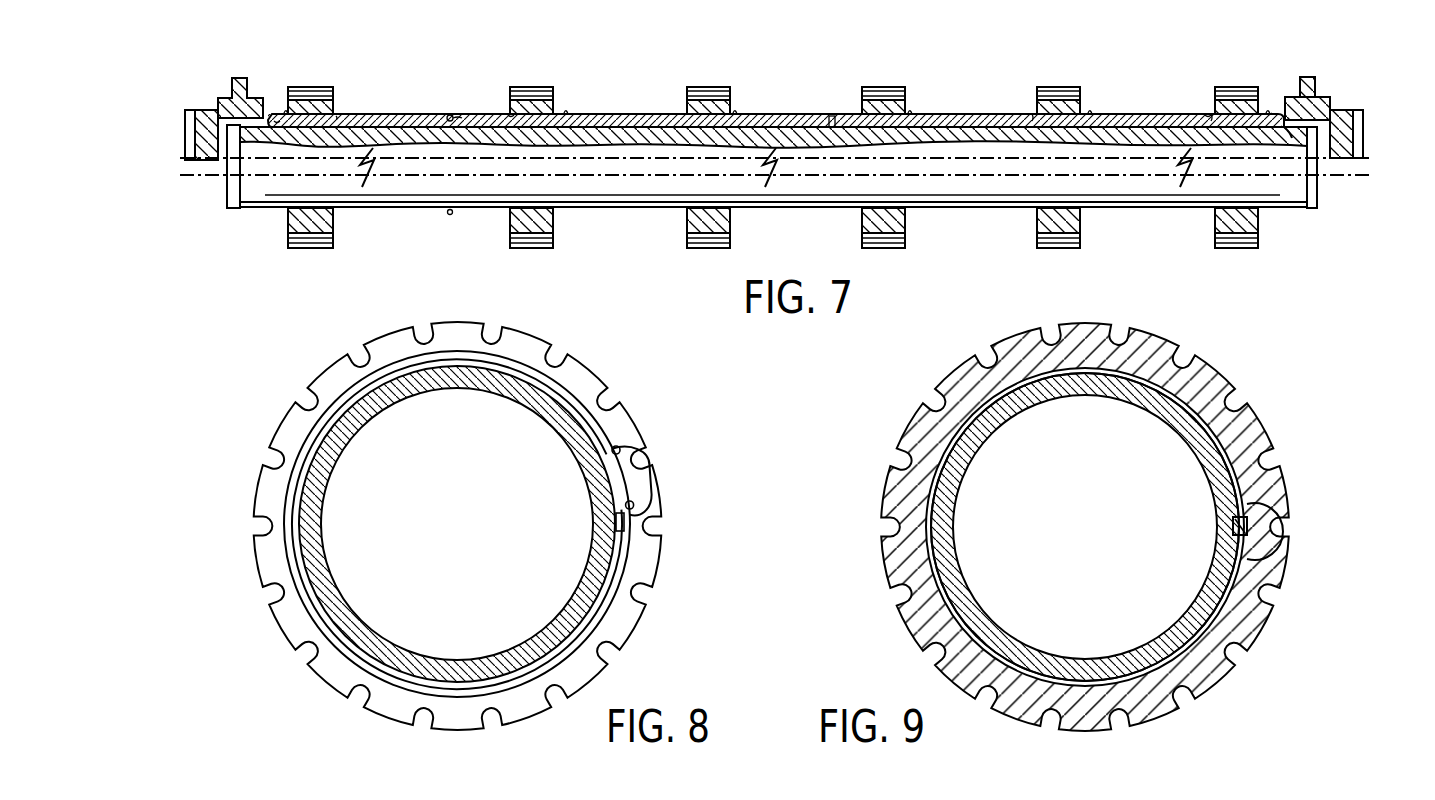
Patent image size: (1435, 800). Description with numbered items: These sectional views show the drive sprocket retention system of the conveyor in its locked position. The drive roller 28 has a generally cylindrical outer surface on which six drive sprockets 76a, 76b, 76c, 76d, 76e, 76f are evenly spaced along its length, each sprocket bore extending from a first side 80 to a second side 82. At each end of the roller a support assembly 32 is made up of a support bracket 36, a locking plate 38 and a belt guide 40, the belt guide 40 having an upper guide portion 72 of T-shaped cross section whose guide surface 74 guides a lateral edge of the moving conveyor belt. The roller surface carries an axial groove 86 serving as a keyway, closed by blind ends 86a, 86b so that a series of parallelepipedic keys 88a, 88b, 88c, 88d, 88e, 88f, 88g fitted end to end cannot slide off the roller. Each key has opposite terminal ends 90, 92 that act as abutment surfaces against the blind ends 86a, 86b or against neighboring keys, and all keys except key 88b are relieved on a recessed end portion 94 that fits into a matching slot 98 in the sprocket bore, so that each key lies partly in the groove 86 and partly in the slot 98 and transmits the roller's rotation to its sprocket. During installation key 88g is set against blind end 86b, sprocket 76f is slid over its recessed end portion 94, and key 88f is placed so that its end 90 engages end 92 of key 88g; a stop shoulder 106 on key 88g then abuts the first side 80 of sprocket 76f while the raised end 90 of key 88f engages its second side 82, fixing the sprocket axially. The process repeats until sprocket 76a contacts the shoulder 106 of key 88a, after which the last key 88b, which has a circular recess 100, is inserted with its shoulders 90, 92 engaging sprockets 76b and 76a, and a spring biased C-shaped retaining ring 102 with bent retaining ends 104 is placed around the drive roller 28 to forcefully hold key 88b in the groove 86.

In FIG. 7, the drive roller 28 is at (625, 197).
In FIG. 8, the drive roller 28 is at (441, 387).
In FIG. 9, the drive roller 28 is at (1070, 387).
In FIG. 7, the support assembly 32 is at (221, 84).
In FIG. 7, the support bracket 36 is at (1360, 141).
In FIG. 7, the locking plate 38 is at (1340, 113).
In FIG. 7, the belt guide 40 is at (1316, 100).
In FIG. 7, the upper guide portion 72 is at (1308, 90).
In FIG. 7, the guide surface 74 is at (1297, 90).
In FIG. 7, the drive sprocket 76a is at (307, 249).
In FIG. 7, the drive sprocket 76b is at (531, 249).
In FIG. 8, the drive sprocket 76b is at (582, 375).
In FIG. 7, the drive sprocket 76c is at (707, 249).
In FIG. 7, the drive sprocket 76d is at (882, 249).
In FIG. 7, the drive sprocket 76e is at (1057, 249).
In FIG. 9, the drive sprocket 76e is at (1208, 374).
In FIG. 7, the drive sprocket 76f is at (1236, 249).
In FIG. 7, the first side 80 is at (334, 232).
In FIG. 7, the second side 82 is at (290, 230).
In FIG. 7, the axial groove 86 is at (830, 116).
In FIG. 8, the axial groove 86 is at (615, 525).
In FIG. 9, the axial groove 86 is at (1232, 526).
In FIG. 7, the blind end 86a is at (268, 126).
In FIG. 7, the blind end 86b is at (1290, 130).
In FIG. 7, the key 88a is at (272, 124).
In FIG. 7, the key 88b is at (401, 117).
In FIG. 8, the key 88b is at (630, 525).
In FIG. 7, the key 88c is at (617, 118).
In FIG. 7, the key 88d is at (800, 118).
In FIG. 7, the key 88e is at (968, 118).
In FIG. 7, the key 88f is at (1150, 118).
In FIG. 9, the key 88f is at (1262, 555).
In FIG. 7, the key 88g is at (1285, 132).
In FIG. 7, the terminal end 90 is at (275, 122).
In FIG. 7, the terminal end 92 is at (338, 119).
In FIG. 7, the recessed end portion 94 is at (315, 88).
In FIG. 9, the recessed end portion 94 is at (1250, 527).
In FIG. 9, the slot 98 is at (1262, 490).
In FIG. 7, the circular recess 100 is at (461, 117).
In FIG. 7, the retaining ring 102 is at (450, 215).
In FIG. 8, the retaining ring 102 is at (582, 418).
In FIG. 8, the bent retaining end 104 is at (652, 477).
In FIG. 7, the stop shoulder 106 is at (287, 112).